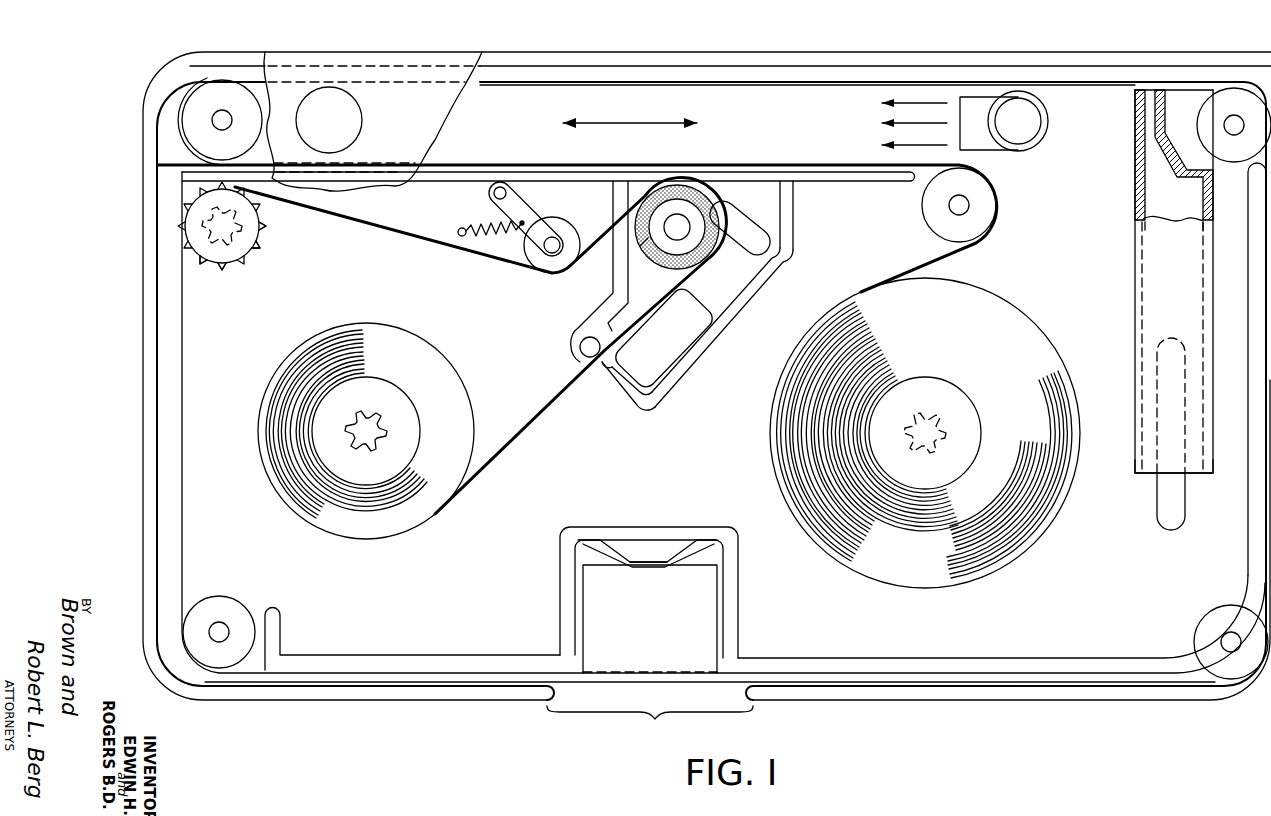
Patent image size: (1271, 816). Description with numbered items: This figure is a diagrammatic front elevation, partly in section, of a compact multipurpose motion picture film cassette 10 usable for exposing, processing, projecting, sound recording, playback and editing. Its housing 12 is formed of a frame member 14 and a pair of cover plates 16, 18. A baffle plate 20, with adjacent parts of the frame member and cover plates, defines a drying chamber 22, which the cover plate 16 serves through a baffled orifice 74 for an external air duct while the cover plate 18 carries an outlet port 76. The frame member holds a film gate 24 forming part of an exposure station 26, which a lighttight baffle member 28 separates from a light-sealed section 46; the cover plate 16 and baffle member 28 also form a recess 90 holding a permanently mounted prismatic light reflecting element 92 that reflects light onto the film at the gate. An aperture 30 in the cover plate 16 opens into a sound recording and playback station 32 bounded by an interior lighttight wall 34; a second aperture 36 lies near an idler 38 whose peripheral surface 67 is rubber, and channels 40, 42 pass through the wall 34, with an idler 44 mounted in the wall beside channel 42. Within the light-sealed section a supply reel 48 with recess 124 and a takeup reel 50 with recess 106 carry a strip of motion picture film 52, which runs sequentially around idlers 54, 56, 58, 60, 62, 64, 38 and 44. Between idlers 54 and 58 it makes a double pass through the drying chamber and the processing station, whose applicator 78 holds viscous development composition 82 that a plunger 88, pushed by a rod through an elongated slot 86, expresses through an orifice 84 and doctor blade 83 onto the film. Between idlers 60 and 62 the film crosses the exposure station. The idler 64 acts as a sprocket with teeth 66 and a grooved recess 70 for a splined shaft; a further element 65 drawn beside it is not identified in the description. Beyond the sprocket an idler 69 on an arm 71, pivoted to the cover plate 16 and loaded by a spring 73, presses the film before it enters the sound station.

The motion picture film cassette 10 is at (133, 304).
The housing 12 is at (157, 452).
The frame member 14 is at (150, 494).
The cover plate 16 is at (190, 535).
The cover plate 18 is at (441, 107).
The baffle plate 20 is at (857, 180).
The drying chamber 22 is at (625, 122).
The film gate 24 is at (650, 720).
The exposure station 26 is at (724, 657).
The lighttight baffle member 28 is at (731, 617).
The aperture 30 is at (700, 290).
The sound recording and playback station 32 is at (758, 259).
The interior lighttight wall 34 is at (725, 333).
The second aperture 36 is at (746, 220).
The idler 38 is at (640, 248).
The channel 40 is at (609, 226).
The channel 42 is at (603, 366).
The idler 44 is at (578, 349).
The light-sealed section 46 is at (642, 491).
The supply reel 48 is at (916, 481).
The takeup reel 50 is at (359, 482).
The strip of motion picture film 52 is at (1066, 87).
The idler 54 is at (951, 232).
The idler 56 is at (214, 149).
The idler 58 is at (1226, 154).
The idler 60 is at (1223, 671).
The idler 62 is at (211, 663).
The idler 64 is at (177, 238).
The sprocket teeth 65 is at (256, 240).
The teeth 66 is at (252, 266).
The peripheral surface 67 is at (660, 258).
The idler 69 is at (548, 272).
The grooved recess 70 is at (172, 213).
The arm 71 is at (516, 204).
The spring 73 is at (476, 226).
The baffled orifice 74 is at (1036, 142).
The outlet port 76 is at (358, 121).
The applicator 78 is at (1135, 282).
The viscous development composition 82 is at (1150, 200).
The doctor blade 83 is at (1140, 96).
The orifice 84 is at (1145, 126).
The elongated slot 86 is at (1164, 517).
The plunger 88 is at (1196, 446).
The recess 90 is at (673, 548).
The light reflecting element 92 is at (710, 588).
The recess 106 is at (355, 440).
The recess 124 is at (950, 433).